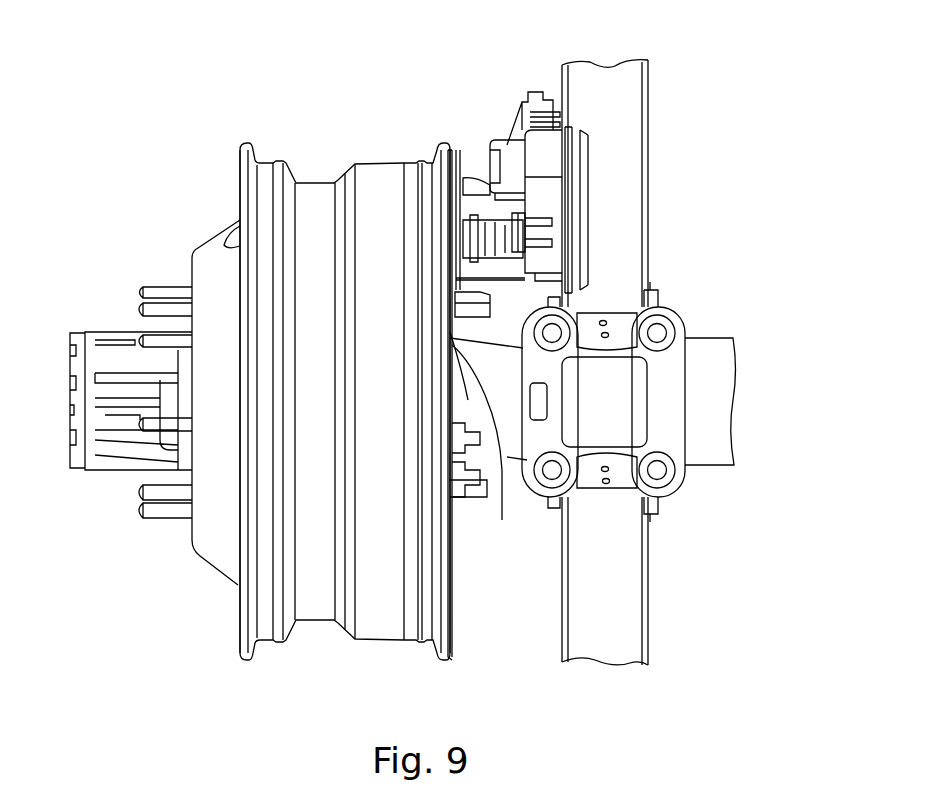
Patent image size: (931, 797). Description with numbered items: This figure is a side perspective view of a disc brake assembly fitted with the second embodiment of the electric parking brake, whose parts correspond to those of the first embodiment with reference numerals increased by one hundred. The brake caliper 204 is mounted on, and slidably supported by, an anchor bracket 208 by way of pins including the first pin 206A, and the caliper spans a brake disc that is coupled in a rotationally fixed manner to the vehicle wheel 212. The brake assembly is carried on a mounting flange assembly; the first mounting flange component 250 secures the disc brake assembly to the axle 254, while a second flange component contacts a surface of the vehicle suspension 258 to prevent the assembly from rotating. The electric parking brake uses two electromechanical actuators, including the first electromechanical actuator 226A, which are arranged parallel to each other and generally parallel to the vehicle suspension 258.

The brake caliper 204 is at (478, 177).
The first pin 206A is at (525, 232).
The anchor bracket 208 is at (452, 150).
The vehicle wheel 212 is at (318, 182).
The first electromechanical actuator 226A is at (528, 80).
The first mounting flange component 250 is at (503, 490).
The axle 254 is at (703, 308).
The vehicle suspension 258 is at (628, 570).